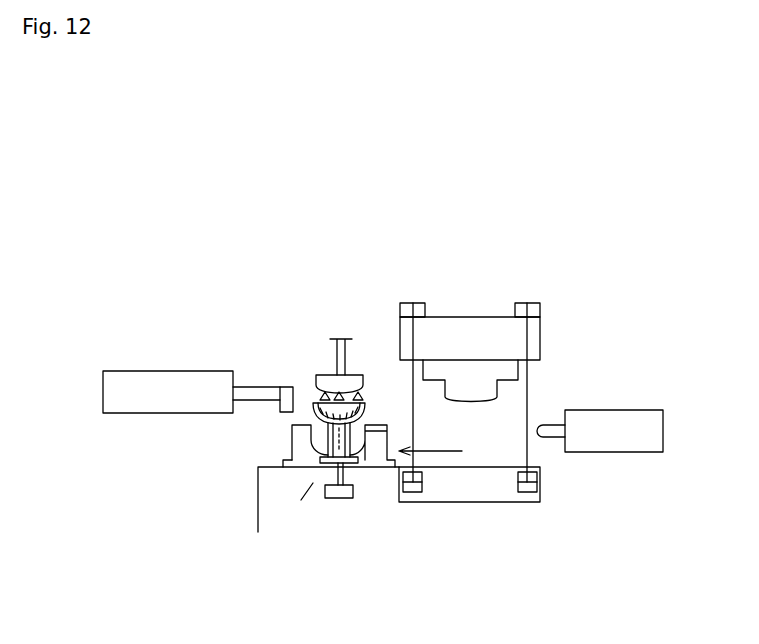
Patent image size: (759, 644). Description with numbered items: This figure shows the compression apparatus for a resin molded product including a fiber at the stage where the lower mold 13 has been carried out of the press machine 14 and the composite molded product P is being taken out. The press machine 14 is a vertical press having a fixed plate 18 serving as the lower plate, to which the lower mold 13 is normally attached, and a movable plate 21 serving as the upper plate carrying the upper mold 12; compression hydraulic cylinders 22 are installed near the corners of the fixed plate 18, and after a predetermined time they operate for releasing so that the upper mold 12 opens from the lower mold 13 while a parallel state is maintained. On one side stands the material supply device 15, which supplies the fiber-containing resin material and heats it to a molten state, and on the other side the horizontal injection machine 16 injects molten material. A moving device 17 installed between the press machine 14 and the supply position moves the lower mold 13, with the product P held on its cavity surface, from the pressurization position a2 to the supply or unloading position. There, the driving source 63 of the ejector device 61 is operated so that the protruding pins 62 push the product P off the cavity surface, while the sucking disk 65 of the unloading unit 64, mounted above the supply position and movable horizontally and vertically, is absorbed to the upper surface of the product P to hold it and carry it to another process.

The upper mold 12 is at (502, 370).
The lower mold 13 is at (298, 440).
The press machine 14 is at (475, 308).
The material supply device 15 is at (155, 370).
The horizontal injection machine 16 is at (630, 408).
The moving device 17 is at (295, 492).
The fixed plate 18 is at (498, 483).
The movable plate 21 is at (483, 333).
The compression hydraulic cylinder 22 is at (413, 488).
The ejector device 61 is at (340, 508).
The protruding pin 62 is at (353, 465).
The driving source 63 is at (347, 495).
The unloading unit 64 is at (323, 363).
The sucking disk 65 is at (305, 395).
The composite molded product P is at (365, 395).
The pressurization position a2 is at (313, 483).